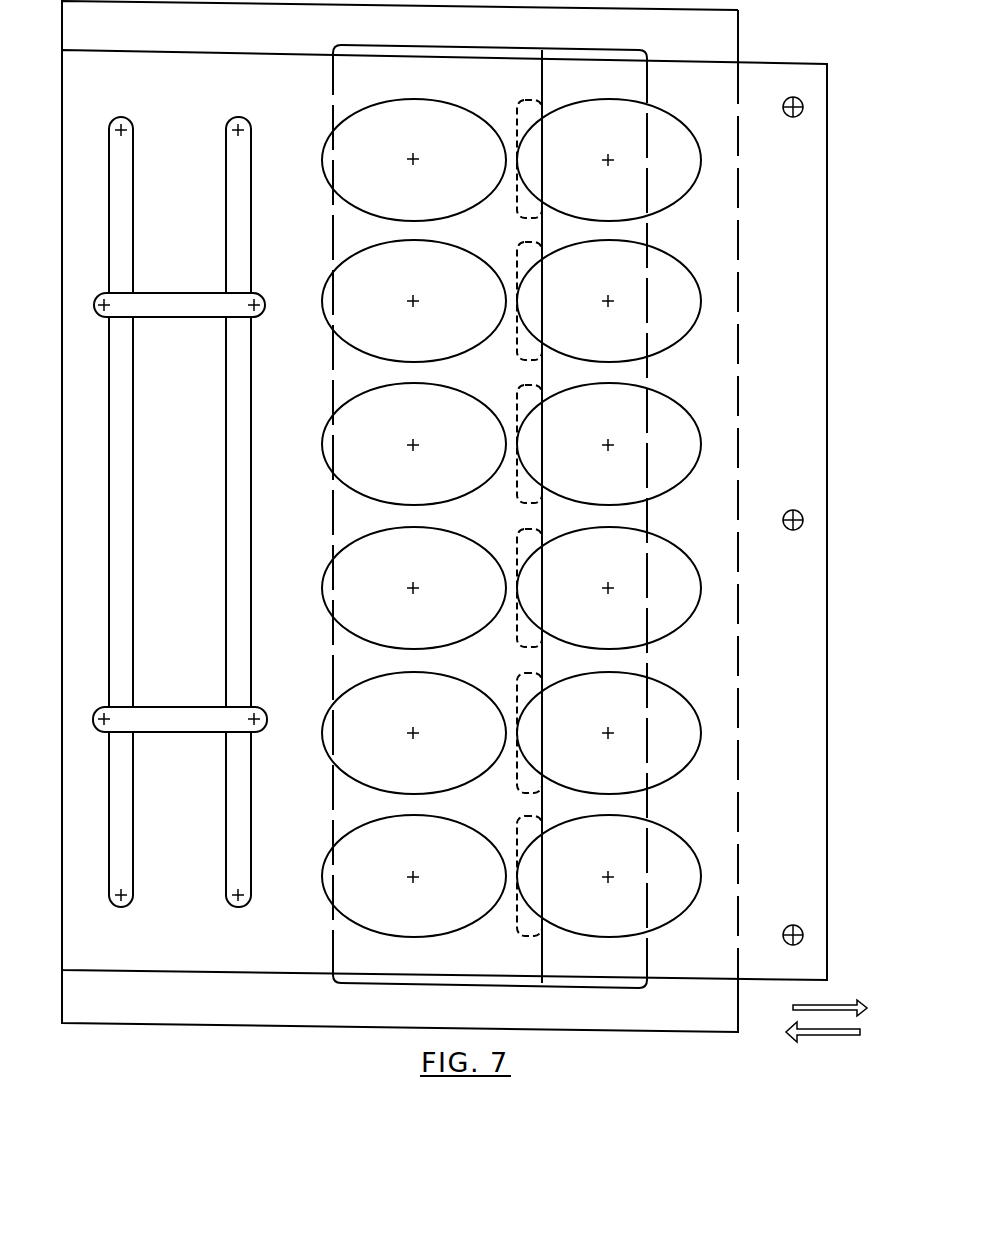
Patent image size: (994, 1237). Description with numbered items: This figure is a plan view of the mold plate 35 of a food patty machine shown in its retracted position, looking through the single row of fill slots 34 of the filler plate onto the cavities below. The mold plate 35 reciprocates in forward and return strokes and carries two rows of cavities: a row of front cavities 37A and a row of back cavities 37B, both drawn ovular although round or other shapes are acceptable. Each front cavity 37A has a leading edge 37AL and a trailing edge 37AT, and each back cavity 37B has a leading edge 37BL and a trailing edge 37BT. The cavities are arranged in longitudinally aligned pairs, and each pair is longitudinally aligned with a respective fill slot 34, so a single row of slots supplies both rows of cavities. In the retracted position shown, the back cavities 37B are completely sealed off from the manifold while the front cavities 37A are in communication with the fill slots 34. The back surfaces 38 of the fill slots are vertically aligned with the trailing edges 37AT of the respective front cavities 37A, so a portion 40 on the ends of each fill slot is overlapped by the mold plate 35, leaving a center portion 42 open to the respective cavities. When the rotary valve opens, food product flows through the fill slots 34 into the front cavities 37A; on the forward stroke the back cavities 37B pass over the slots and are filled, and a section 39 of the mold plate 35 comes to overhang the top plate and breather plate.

The fill slot 34 is at (542, 893).
The mold plate 35 is at (832, 639).
The front cavity 37A is at (597, 649).
The leading edge of front cavity 37AL is at (692, 300).
The trailing edge of front cavity 37AT is at (518, 440).
The back cavity 37B is at (414, 528).
The leading edge of back cavity 37BL is at (506, 440).
The trailing edge of back cavity 37BT is at (323, 293).
The back surface of fill slot 38 is at (527, 770).
The section of mold plate 39 is at (522, 113).
The overlapped portion of fill slot 40 is at (520, 203).
The center portion of fill slot 42 is at (532, 303).